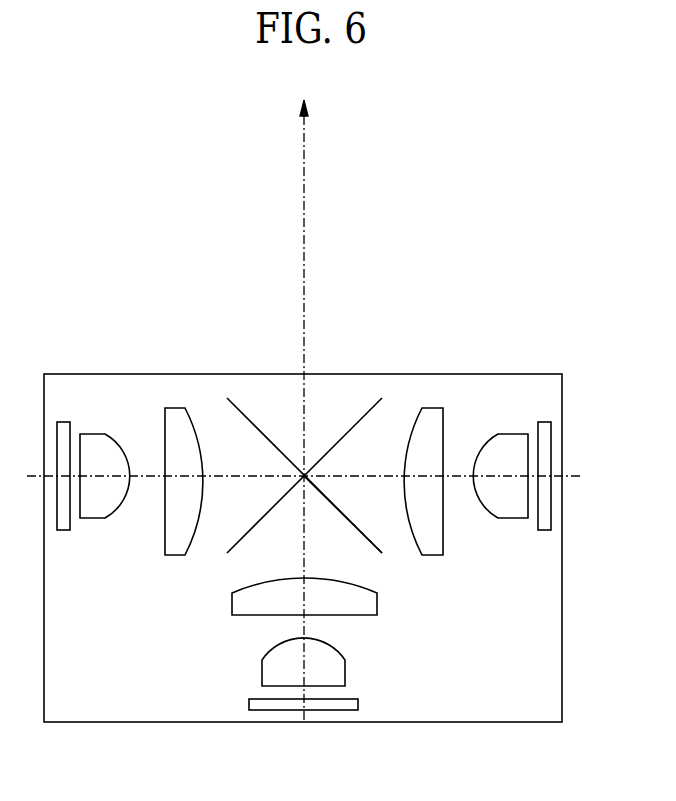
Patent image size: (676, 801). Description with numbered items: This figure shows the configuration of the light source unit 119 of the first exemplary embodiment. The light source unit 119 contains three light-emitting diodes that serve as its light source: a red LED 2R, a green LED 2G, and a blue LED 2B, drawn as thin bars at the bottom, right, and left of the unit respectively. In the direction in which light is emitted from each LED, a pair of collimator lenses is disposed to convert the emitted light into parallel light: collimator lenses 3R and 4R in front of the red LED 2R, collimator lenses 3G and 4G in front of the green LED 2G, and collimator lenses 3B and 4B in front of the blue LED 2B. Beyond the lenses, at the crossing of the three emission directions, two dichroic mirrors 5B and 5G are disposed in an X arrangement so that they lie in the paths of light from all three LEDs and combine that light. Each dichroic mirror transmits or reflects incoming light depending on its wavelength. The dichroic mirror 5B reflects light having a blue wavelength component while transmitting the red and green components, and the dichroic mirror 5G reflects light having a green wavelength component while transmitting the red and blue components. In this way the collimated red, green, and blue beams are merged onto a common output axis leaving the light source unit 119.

The light source unit 119 is at (123, 374).
The blue LED 2B is at (62, 531).
The collimator lens 3B is at (95, 442).
The collimator lens 4B is at (168, 536).
The dichroic mirror 5B is at (340, 440).
The dichroic mirror 5G is at (372, 542).
The green LED 2G is at (547, 503).
The collimator lens 3G is at (510, 510).
The collimator lens 4G is at (436, 551).
The red LED 2R is at (356, 703).
The collimator lens 3R is at (267, 669).
The collimator lens 4R is at (236, 603).